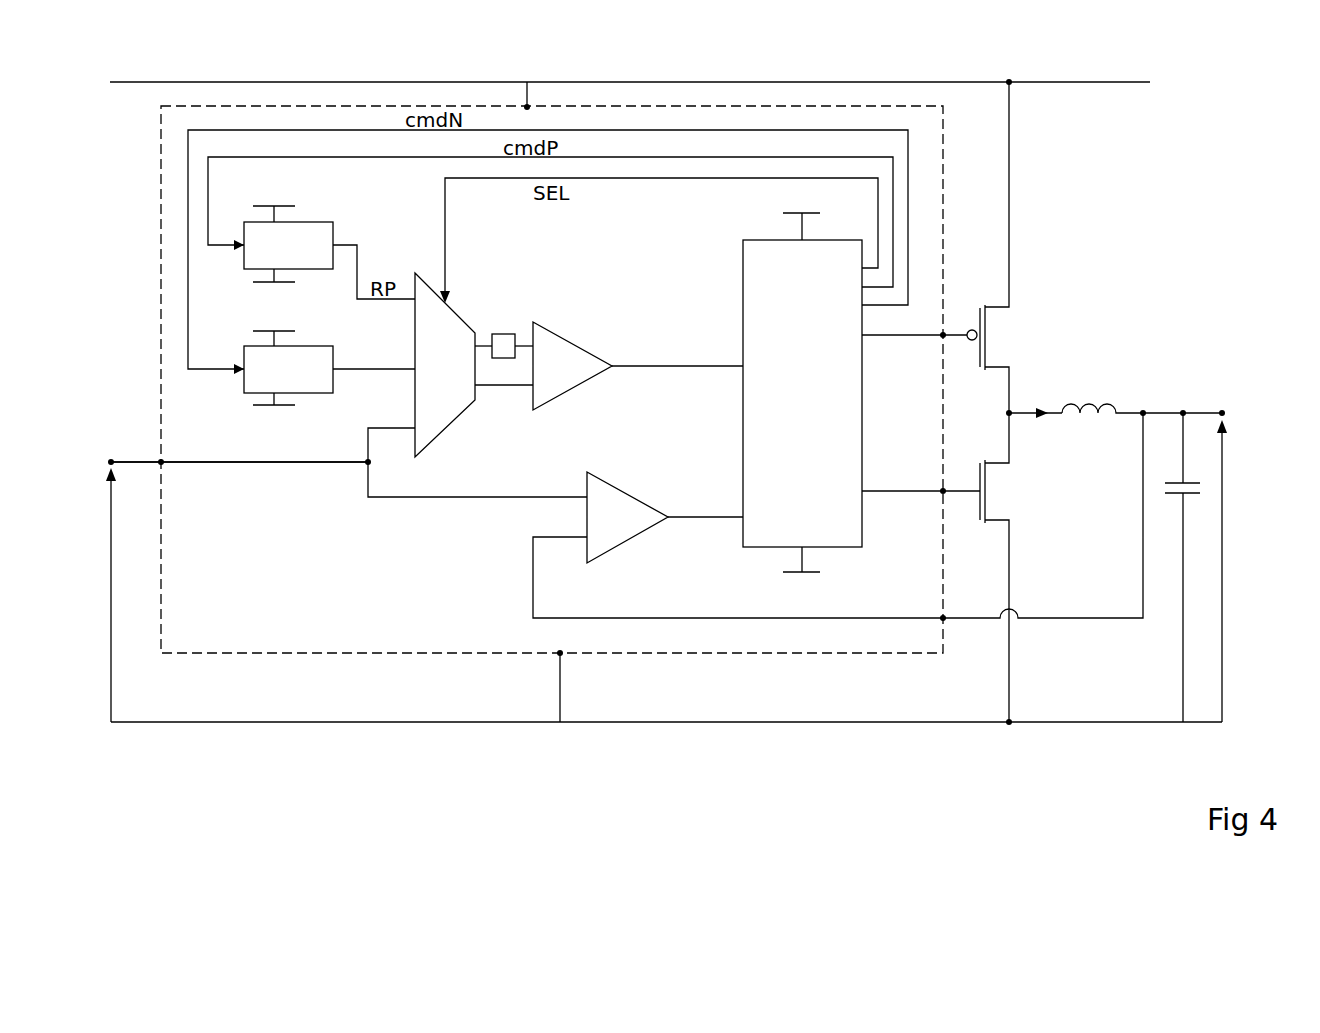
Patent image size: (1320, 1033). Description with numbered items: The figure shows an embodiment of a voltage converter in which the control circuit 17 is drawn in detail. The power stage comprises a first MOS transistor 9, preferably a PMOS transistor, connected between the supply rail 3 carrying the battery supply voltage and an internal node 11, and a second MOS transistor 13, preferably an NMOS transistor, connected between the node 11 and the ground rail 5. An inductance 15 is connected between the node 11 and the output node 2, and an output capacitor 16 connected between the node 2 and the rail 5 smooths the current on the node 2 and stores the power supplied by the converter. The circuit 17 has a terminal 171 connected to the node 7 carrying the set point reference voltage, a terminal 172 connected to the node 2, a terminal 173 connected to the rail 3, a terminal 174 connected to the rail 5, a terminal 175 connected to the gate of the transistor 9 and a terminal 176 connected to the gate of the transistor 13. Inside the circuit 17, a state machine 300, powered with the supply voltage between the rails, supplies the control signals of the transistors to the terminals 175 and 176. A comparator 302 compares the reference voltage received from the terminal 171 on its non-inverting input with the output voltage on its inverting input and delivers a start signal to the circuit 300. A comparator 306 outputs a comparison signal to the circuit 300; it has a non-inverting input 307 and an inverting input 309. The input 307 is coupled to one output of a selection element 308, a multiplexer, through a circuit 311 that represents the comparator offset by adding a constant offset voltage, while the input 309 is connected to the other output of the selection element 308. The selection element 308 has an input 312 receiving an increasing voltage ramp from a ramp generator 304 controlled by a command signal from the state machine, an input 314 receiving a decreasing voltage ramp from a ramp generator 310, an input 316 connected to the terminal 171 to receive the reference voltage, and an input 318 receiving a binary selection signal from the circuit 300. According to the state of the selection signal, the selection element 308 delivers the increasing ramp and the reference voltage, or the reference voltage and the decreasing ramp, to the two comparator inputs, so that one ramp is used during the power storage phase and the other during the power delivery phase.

The node 2 is at (1224, 411).
The rail 3 is at (1100, 82).
The rail 5 is at (1165, 722).
The node 7 is at (109, 460).
The first MOS transistor 9 is at (997, 338).
The internal node 11 is at (1011, 411).
The second MOS transistor 13 is at (995, 500).
The inductance 15 is at (1105, 404).
The output capacitor 16 is at (1195, 493).
The circuit 17 is at (943, 176).
The terminal 171 is at (163, 460).
The terminal 172 is at (940, 619).
The terminal 173 is at (530, 106).
The terminal 174 is at (562, 651).
The terminal 175 is at (941, 337).
The terminal 176 is at (941, 493).
The state machine 300 is at (802, 394).
The comparator 302 is at (622, 528).
The ramp generator 304 is at (305, 222).
The comparator 306 is at (572, 345).
The input 307 is at (522, 346).
The selection element 308 is at (450, 324).
The input 309 is at (520, 386).
The ramp generator 310 is at (322, 393).
The circuit 311 is at (503, 334).
The input 312 is at (405, 292).
The input 314 is at (410, 372).
The input 316 is at (414, 433).
The input 318 is at (448, 297).